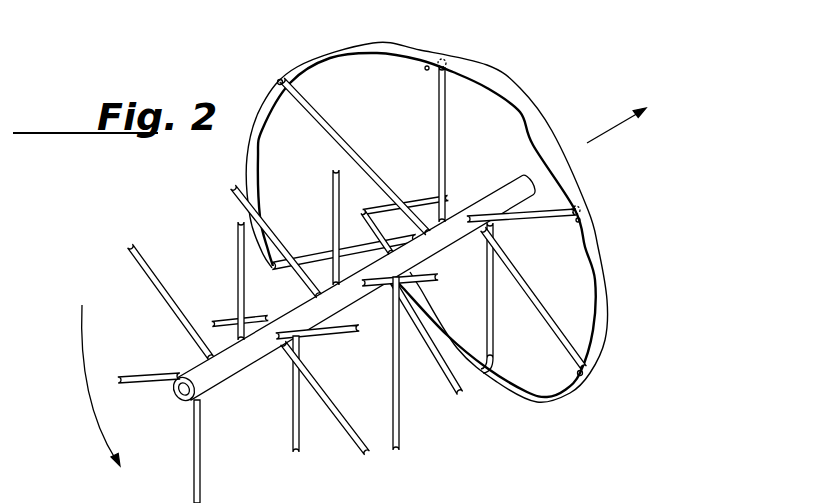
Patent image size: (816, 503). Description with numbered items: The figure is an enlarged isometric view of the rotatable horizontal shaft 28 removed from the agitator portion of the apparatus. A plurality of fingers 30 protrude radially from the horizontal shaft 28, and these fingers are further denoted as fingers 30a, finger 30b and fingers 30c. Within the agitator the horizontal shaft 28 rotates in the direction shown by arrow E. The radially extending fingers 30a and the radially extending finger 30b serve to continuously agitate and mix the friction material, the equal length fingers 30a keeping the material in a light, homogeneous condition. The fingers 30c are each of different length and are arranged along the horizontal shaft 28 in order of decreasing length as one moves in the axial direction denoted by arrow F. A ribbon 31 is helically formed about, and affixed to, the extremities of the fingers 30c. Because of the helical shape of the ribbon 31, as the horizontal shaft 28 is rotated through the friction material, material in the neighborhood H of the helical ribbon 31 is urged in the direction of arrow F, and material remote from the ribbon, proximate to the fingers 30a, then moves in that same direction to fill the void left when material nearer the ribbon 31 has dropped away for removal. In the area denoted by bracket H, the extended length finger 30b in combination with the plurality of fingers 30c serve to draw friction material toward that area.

The horizontal shaft 28 is at (202, 370).
The fingers 30 is at (130, 254).
The radially extending fingers 30a is at (238, 240).
The extended length finger 30b is at (402, 422).
The radially extending fingers 30c is at (337, 120).
The ribbon 31 is at (598, 244).
The arrow E is at (80, 350).
The arrow F is at (625, 128).
The bracket H is at (498, 498).